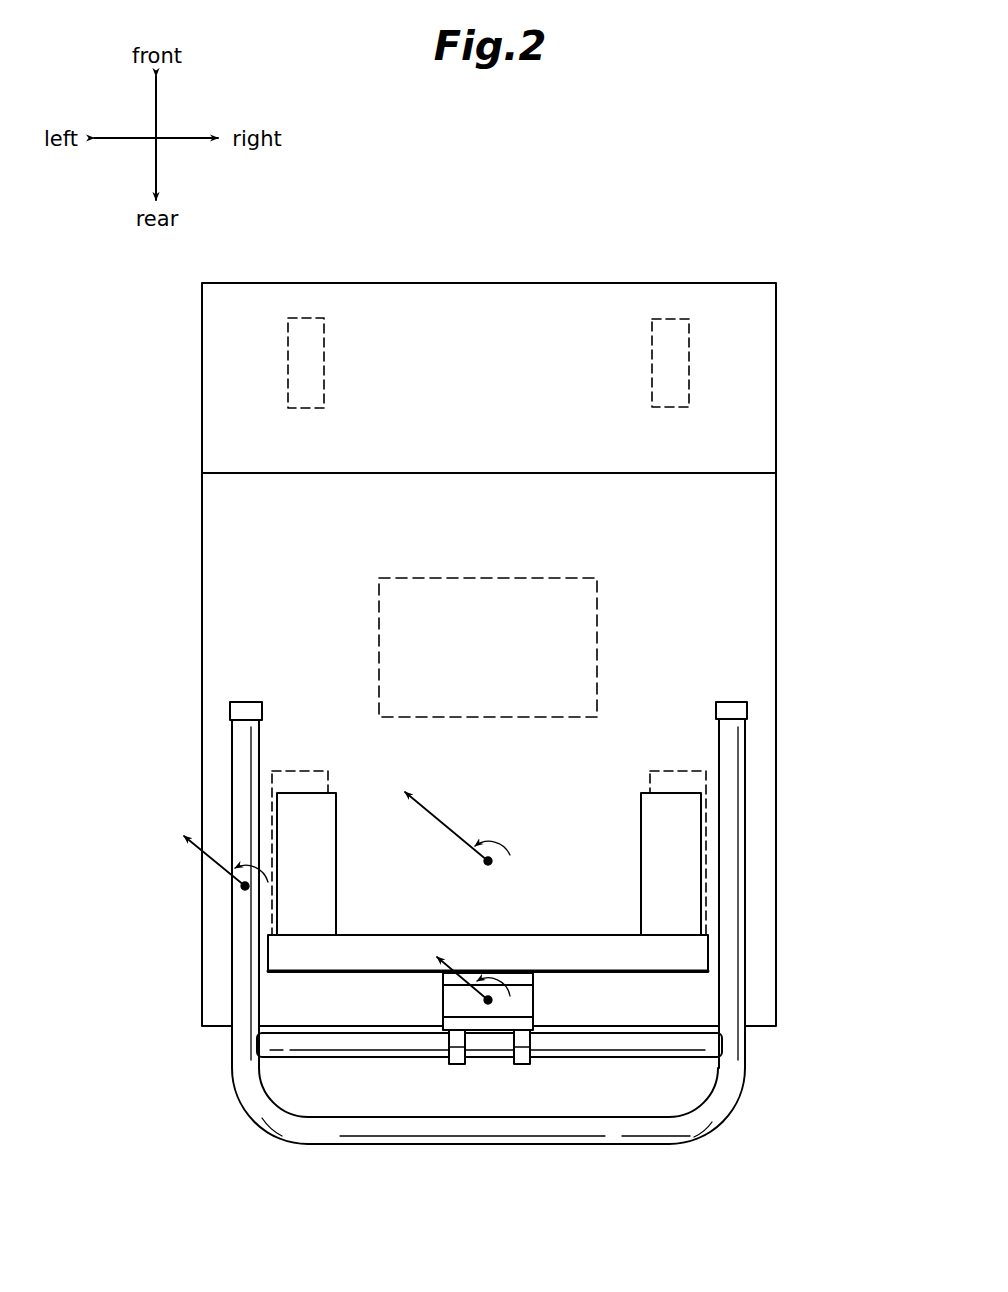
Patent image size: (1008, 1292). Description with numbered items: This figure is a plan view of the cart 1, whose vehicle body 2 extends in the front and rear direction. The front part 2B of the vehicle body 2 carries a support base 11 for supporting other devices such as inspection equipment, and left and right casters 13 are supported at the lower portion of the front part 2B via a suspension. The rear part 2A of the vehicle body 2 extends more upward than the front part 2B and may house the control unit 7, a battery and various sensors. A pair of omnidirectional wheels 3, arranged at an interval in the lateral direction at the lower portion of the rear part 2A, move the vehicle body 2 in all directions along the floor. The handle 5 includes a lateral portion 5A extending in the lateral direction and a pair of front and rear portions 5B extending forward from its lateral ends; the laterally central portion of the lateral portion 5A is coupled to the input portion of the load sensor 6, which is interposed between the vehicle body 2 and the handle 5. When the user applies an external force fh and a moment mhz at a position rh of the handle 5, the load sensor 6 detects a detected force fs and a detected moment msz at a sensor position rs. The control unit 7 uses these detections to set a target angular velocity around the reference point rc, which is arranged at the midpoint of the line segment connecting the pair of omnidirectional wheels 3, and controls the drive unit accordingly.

The cart 1 is at (548, 250).
The vehicle body 2 is at (411, 285).
The rear part 2A is at (676, 673).
The front part 2B is at (715, 423).
The omnidirectional wheel 3 is at (306, 768).
The handle 5 is at (493, 955).
The lateral portion 5A is at (607, 1045).
The front and rear portion 5B is at (242, 738).
The load sensor 6 is at (522, 1005).
The control unit 7 is at (578, 577).
The support base 11 is at (603, 321).
The caster 13 is at (304, 316).
The reference point rc is at (492, 864).
The position rh is at (245, 886).
The external force fh is at (198, 853).
The moment mhz is at (260, 865).
The sensor position rs is at (488, 1000).
The detected force fs is at (465, 975).
The detected moment msz is at (510, 993).